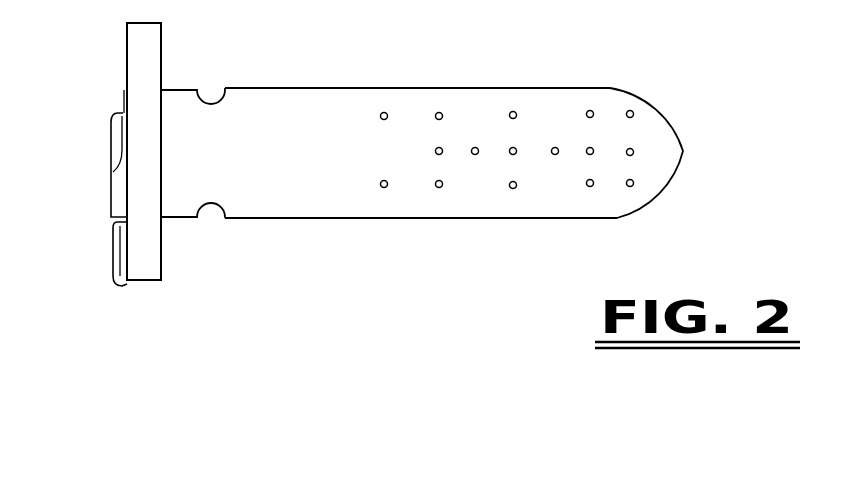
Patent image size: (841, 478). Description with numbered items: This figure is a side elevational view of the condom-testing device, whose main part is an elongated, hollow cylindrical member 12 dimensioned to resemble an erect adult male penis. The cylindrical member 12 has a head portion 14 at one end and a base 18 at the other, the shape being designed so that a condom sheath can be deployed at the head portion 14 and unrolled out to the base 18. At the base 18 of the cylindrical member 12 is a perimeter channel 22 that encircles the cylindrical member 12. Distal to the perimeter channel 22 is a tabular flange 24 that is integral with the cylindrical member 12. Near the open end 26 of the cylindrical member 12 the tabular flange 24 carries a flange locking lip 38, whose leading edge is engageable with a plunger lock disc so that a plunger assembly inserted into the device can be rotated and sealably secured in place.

The cylindrical member 12 is at (338, 182).
The head portion 14 is at (668, 151).
The base 18 is at (180, 258).
The perimeter channel 22 is at (210, 92).
The tabular flange 24 is at (141, 267).
The open end 26 is at (125, 98).
The flange locking lip 38 is at (111, 205).